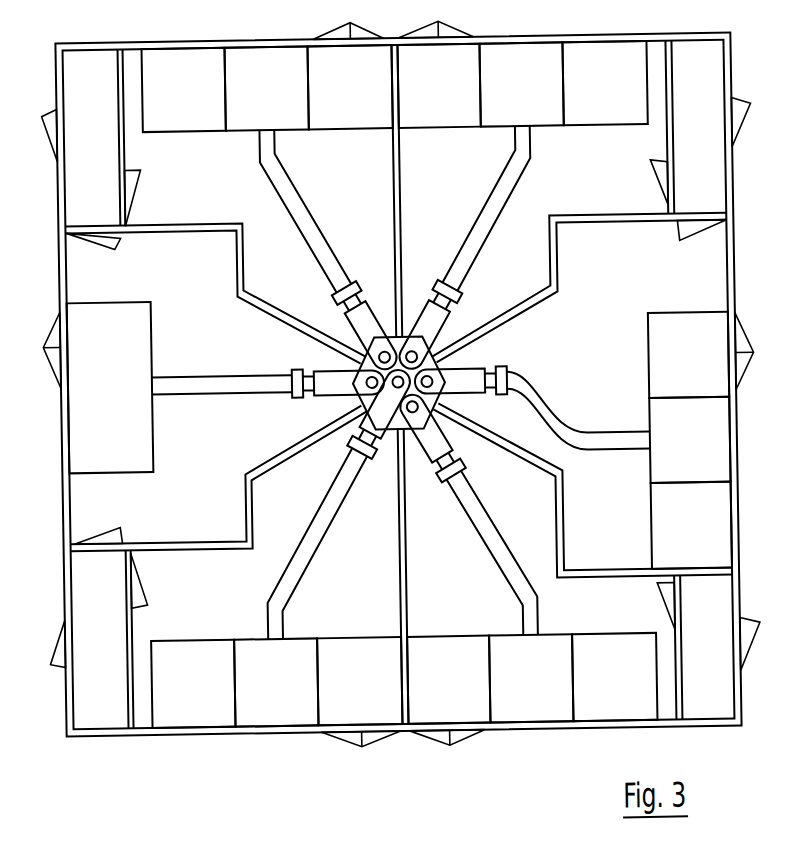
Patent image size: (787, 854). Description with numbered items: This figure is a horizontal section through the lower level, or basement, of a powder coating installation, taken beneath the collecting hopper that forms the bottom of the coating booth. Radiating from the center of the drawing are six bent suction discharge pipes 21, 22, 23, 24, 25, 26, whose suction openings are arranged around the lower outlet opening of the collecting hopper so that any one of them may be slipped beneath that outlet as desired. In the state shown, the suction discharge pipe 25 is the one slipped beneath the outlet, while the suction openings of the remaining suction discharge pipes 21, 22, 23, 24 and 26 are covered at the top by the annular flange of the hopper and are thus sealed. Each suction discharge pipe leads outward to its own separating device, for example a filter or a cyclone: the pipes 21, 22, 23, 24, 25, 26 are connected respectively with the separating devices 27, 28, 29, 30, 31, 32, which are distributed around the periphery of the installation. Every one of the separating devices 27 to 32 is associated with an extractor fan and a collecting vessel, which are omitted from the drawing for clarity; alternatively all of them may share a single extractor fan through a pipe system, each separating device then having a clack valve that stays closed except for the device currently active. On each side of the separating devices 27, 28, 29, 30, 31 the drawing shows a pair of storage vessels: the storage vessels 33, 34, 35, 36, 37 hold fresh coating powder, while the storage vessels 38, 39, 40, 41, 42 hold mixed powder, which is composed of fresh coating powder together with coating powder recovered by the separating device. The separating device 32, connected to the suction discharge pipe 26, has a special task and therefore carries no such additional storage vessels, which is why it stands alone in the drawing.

The suction discharge pipe 21 is at (366, 285).
The suction discharge pipe 22 is at (418, 284).
The suction discharge pipe 23 is at (461, 381).
The suction discharge pipe 24 is at (429, 433).
The suction discharge pipe 25 is at (380, 452).
The suction discharge pipe 26 is at (333, 372).
The separating device 27 is at (255, 111).
The separating device 28 is at (509, 111).
The separating device 29 is at (677, 473).
The separating device 30 is at (511, 697).
The separating device 31 is at (257, 697).
The separating device 32 is at (87, 408).
The storage vessel 33 is at (167, 111).
The storage vessel 34 is at (427, 111).
The storage vessel 35 is at (671, 374).
The storage vessel 36 is at (594, 697).
The storage vessel 37 is at (341, 697).
The storage vessel 38 is at (338, 111).
The storage vessel 39 is at (593, 111).
The storage vessel 40 is at (678, 558).
The storage vessel 41 is at (427, 697).
The storage vessel 42 is at (180, 697).